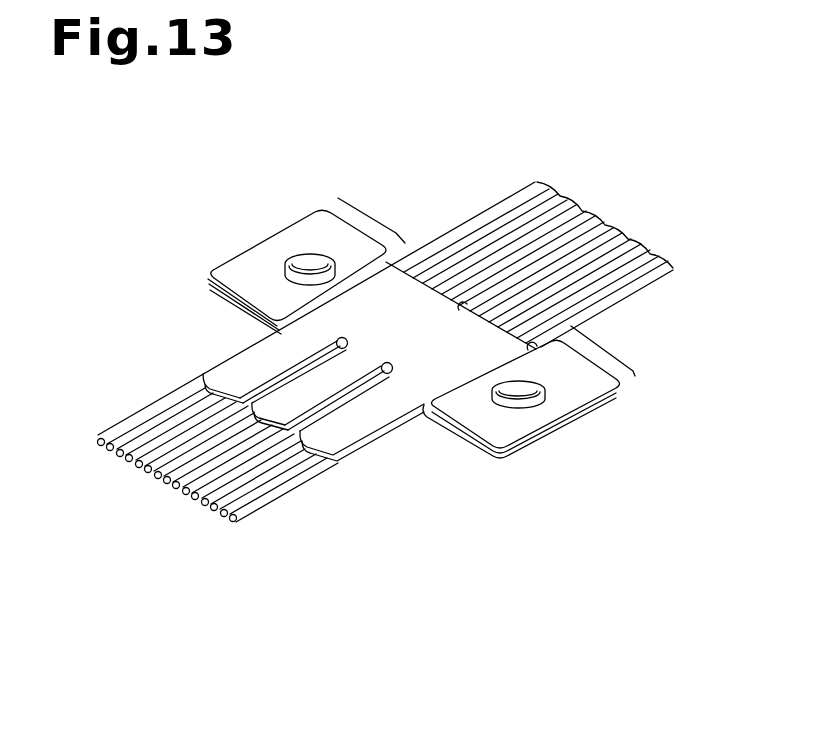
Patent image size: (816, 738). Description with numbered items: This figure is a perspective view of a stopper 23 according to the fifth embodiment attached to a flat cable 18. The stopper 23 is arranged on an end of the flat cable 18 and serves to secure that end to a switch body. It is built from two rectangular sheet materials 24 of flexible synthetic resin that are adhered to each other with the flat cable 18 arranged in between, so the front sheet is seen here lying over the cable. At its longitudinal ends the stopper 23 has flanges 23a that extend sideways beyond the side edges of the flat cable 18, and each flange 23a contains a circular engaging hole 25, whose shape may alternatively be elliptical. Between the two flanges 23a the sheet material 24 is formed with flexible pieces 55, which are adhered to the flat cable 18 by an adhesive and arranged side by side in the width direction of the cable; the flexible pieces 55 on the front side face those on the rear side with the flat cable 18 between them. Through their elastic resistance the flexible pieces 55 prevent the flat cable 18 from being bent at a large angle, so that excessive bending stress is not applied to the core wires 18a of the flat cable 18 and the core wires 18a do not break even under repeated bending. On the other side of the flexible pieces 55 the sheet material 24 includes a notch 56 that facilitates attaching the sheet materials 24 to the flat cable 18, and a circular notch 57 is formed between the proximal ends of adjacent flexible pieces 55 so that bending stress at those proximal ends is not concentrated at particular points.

The flat cable 18 is at (469, 212).
The core wires 18a is at (541, 189).
The stopper 23 is at (267, 226).
The flange 23a is at (495, 277).
The sheet material 24 is at (583, 430).
The engaging hole 25 is at (308, 279).
The flexible piece 55 is at (222, 368).
The notch 56 is at (466, 310).
The circular notch 57 is at (332, 336).